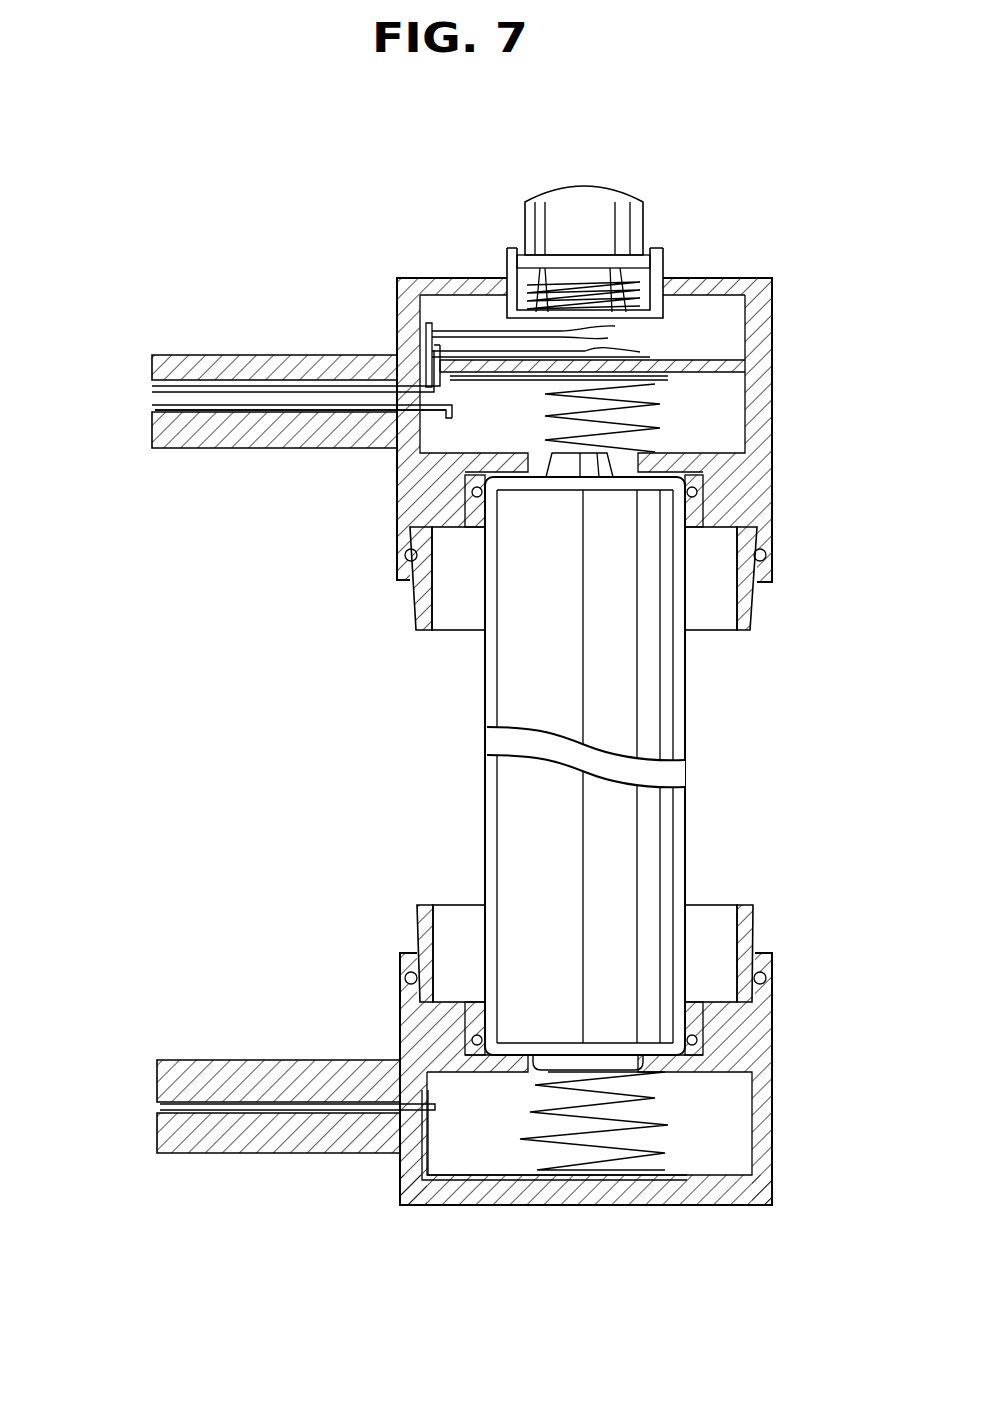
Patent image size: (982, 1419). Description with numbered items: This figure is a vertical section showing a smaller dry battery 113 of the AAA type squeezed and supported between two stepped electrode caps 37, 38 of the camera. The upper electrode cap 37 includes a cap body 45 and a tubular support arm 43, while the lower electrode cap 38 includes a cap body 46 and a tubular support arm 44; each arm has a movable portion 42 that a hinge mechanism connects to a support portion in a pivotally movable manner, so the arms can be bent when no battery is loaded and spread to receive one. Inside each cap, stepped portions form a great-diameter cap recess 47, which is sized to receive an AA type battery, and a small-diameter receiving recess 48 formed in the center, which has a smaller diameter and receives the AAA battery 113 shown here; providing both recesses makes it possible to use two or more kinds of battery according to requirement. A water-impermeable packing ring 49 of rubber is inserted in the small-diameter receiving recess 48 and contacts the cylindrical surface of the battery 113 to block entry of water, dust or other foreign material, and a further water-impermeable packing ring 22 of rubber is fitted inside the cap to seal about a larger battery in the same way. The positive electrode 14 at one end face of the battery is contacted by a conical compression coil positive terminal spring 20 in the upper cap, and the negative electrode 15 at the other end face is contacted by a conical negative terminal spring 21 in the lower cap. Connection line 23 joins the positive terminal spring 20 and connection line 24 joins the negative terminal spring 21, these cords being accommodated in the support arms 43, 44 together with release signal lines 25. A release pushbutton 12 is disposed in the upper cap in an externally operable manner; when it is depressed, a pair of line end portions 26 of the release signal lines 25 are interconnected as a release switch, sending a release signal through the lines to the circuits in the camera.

The release pushbutton 12 is at (590, 212).
The positive electrode 14 is at (630, 472).
The negative electrode 15 is at (640, 1068).
The positive terminal spring 20 is at (548, 398).
The negative terminal spring 21 is at (530, 1116).
The water-impermeable packing ring 22 is at (420, 608).
The connection line 23 is at (200, 412).
The connection line 24 is at (258, 1112).
The release signal lines 25 is at (245, 384).
The line end portions 26 is at (600, 352).
The electrode cap 37 is at (395, 272).
The electrode cap 38 is at (398, 1210).
The movable portion 42 is at (327, 358).
The tubular support arm 43 is at (138, 372).
The tubular support arm 44 is at (148, 1036).
The cap body 45 is at (462, 276).
The cap body 46 is at (723, 1198).
The great-diameter cap recess 47 is at (410, 550).
The small-diameter receiving recess 48 is at (466, 500).
The water-impermeable packing ring 49 is at (470, 532).
The dry battery 113 is at (496, 700).